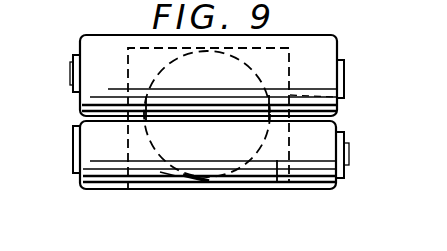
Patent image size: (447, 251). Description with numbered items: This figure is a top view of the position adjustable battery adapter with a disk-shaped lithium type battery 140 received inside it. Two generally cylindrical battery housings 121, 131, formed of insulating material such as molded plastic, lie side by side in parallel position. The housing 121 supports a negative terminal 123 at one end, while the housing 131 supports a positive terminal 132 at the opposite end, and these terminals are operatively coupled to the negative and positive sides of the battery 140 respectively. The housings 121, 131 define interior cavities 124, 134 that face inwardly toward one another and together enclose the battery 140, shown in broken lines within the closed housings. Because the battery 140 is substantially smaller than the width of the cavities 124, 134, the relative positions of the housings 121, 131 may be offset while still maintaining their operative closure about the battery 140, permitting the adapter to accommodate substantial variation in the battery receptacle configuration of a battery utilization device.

The battery housing 121 is at (331, 48).
The negative terminal 123 is at (346, 75).
The interior cavity 124 is at (335, 97).
The battery housing 131 is at (330, 190).
The positive terminal 132 is at (350, 152).
The interior cavity 134 is at (289, 182).
The disk-shaped lithium type battery 140 is at (203, 147).